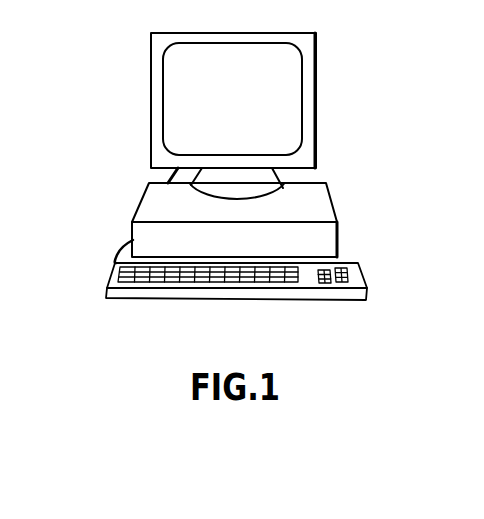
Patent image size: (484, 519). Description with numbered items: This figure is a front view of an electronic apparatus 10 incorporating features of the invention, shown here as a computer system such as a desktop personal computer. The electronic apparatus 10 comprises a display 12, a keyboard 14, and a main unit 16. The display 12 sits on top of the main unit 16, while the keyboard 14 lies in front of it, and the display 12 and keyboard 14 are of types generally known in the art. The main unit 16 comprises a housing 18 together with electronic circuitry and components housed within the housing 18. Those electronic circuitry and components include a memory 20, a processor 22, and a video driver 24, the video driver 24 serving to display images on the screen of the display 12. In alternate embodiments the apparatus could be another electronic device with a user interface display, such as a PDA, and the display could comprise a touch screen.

The electronic apparatus 10 is at (108, 62).
The display 12 is at (317, 62).
The keyboard 14 is at (112, 275).
The main unit 16 is at (145, 188).
The housing 18 is at (241, 202).
The memory 20 is at (318, 190).
The processor 22 is at (323, 210).
The video driver 24 is at (148, 209).